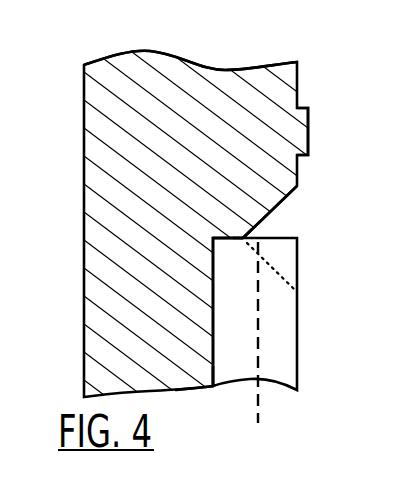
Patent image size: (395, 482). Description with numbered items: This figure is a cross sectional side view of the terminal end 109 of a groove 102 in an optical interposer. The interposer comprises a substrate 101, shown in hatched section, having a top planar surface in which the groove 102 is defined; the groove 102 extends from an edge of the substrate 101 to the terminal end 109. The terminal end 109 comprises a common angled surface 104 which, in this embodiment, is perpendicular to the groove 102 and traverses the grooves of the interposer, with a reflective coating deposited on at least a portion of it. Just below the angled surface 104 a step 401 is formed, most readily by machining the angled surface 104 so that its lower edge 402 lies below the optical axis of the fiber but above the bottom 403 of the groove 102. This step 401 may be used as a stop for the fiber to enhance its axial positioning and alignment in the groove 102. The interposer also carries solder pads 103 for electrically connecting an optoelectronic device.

The terminal end 109 is at (108, 38).
The substrate 101 is at (95, 313).
The groove 102 is at (248, 372).
The solder pads 103 is at (309, 127).
The common angled surface 104 is at (275, 204).
The step 401 is at (227, 240).
The lower edge 402 is at (243, 236).
The bottom 403 is at (215, 388).